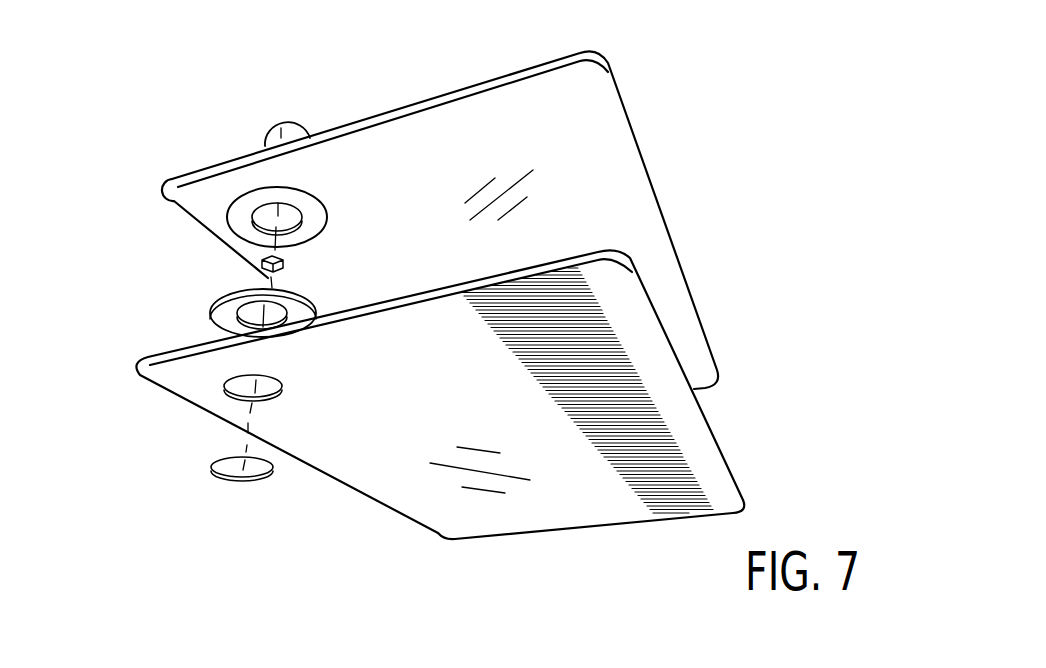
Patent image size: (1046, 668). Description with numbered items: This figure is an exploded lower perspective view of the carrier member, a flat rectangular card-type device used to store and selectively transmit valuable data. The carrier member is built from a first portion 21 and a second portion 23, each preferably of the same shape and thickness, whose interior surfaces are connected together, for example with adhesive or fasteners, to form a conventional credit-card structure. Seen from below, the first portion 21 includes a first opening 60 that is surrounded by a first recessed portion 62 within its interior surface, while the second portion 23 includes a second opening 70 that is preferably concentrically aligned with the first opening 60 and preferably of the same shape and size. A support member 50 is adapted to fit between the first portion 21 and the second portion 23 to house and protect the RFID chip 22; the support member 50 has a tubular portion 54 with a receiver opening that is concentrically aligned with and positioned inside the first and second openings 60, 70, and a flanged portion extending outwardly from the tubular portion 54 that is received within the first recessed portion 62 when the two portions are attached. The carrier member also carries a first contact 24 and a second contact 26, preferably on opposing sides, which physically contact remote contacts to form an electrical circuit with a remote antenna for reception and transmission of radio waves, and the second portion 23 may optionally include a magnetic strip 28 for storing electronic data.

The first portion 21 is at (610, 65).
The second portion 23 is at (527, 512).
The first contact 24 is at (278, 121).
The first recessed portion 62 is at (236, 207).
The first opening 60 is at (253, 216).
The RFID chip 22 is at (262, 271).
The tubular portion 54 is at (250, 288).
The support member 50 is at (212, 316).
The second opening 70 is at (228, 392).
The second contact 26 is at (237, 467).
The magnetic strip 28 is at (636, 418).